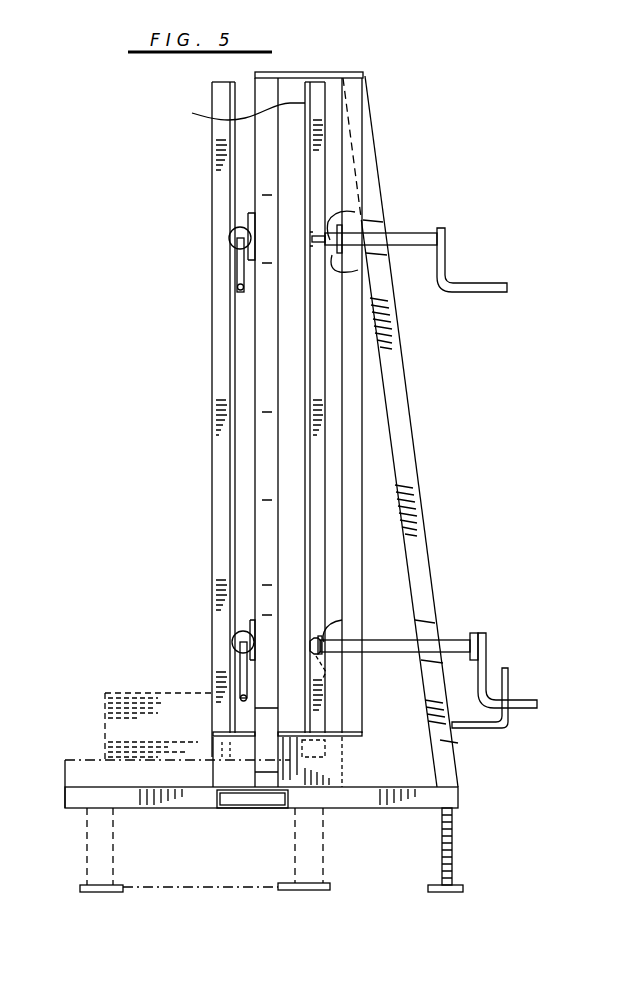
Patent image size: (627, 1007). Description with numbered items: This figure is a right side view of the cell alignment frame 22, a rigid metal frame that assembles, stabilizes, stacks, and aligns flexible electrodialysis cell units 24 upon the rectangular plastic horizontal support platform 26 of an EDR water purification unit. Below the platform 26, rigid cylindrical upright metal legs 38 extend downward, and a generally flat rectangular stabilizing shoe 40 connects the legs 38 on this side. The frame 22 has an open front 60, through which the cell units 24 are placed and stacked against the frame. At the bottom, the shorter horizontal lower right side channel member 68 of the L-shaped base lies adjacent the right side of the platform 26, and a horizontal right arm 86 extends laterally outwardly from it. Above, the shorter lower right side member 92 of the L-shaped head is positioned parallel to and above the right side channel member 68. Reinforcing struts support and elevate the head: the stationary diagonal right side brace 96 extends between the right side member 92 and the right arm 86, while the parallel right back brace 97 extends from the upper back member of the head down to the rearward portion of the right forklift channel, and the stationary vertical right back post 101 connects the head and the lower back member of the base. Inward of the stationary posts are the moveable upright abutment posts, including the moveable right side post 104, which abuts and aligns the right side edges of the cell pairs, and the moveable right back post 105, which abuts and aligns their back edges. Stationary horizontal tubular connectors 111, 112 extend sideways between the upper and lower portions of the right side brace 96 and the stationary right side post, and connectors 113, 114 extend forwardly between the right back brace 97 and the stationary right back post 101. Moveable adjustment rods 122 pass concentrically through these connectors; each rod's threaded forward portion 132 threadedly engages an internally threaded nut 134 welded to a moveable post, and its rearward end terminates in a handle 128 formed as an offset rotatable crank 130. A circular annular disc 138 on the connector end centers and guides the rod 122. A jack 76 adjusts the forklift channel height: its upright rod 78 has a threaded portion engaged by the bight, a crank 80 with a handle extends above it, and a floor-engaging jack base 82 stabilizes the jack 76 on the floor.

The cell alignment frame 22 is at (368, 76).
The electrodialysis cell units 24 is at (150, 690).
The horizontal support platform 26 is at (88, 760).
The legs 38 is at (323, 868).
The stabilizing shoes 40 is at (255, 888).
The open front 60 is at (158, 507).
The right side channel member 68 is at (148, 808).
The jack 76 is at (453, 840).
The upright rod 78 is at (452, 738).
The crank 80 is at (512, 716).
The jack base 82 is at (455, 886).
The horizontal right arm 86 is at (246, 795).
The lower right side member 92 is at (336, 72).
The right side brace 96 is at (255, 385).
The right back brace 97 is at (410, 402).
The stationary right back post 101 is at (362, 735).
The moveable right side post 104 is at (213, 345).
The moveable right back post 105 is at (232, 112).
The upper right side connector 111 is at (229, 238).
The lower right side connector 112 is at (233, 642).
The upper right back connector 113 is at (427, 233).
The lower right back connector 114 is at (462, 638).
The adjustment rods 122 is at (330, 232).
The handle 128 is at (475, 289).
The rotatable crank 130 is at (520, 698).
The threaded forward portion 132 is at (334, 626).
The internally threaded nut 134 is at (336, 682).
The circular annular disc 138 is at (358, 270).